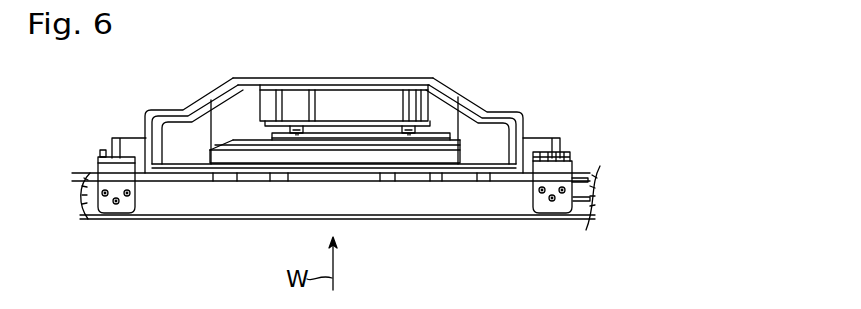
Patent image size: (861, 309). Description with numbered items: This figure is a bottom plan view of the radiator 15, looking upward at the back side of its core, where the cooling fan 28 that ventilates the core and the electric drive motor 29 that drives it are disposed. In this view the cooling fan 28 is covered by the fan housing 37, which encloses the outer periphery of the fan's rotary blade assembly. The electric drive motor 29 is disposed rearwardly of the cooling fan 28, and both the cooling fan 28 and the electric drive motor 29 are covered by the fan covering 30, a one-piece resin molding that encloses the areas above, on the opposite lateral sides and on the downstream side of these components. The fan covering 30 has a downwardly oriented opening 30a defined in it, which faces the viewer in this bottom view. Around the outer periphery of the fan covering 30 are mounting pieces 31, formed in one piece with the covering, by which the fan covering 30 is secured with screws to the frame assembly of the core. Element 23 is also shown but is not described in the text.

The radiator 15 is at (472, 220).
The mounting plate 23 is at (242, 200).
The cooling fan 28 is at (386, 158).
The electric drive motor 29 is at (387, 100).
The fan covering 30 is at (207, 98).
The opening 30a is at (246, 100).
The mounting pieces 31 is at (117, 176).
The fan housing 37 is at (443, 155).